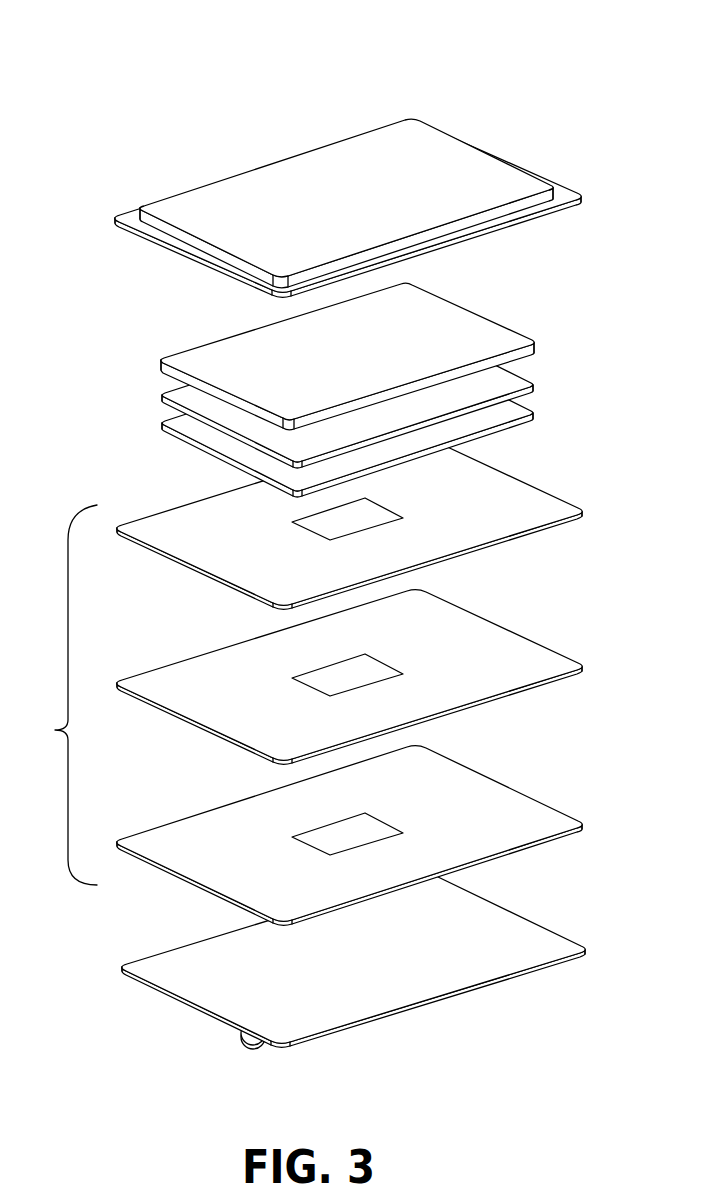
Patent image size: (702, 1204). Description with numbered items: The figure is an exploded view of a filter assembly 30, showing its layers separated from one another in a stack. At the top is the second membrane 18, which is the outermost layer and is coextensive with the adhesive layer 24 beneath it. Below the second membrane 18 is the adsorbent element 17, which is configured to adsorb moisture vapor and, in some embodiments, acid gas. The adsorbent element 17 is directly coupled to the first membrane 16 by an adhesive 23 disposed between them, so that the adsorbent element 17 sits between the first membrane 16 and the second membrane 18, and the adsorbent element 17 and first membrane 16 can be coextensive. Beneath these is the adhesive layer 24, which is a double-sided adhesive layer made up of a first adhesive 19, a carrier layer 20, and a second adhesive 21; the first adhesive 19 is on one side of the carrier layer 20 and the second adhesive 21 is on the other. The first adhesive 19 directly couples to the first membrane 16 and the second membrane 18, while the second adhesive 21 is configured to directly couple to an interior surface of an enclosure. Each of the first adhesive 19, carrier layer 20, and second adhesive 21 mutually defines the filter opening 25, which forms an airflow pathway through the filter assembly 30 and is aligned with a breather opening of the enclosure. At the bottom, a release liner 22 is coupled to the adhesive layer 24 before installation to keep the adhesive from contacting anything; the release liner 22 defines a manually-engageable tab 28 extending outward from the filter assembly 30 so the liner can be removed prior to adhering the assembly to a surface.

The filter assembly 30 is at (139, 84).
The second membrane 18 is at (470, 178).
The adsorbent element 17 is at (483, 338).
The adhesive 23 is at (512, 383).
The first membrane 16 is at (492, 420).
The first adhesive 19 is at (542, 510).
The carrier layer 20 is at (527, 658).
The second adhesive 21 is at (527, 818).
The release liner 22 is at (527, 948).
The adhesive layer 24 is at (55, 730).
The filter opening 25 is at (317, 520).
The tab 28 is at (247, 1040).